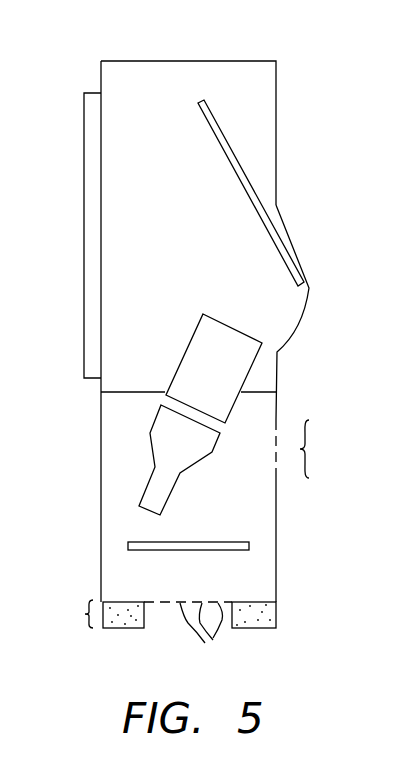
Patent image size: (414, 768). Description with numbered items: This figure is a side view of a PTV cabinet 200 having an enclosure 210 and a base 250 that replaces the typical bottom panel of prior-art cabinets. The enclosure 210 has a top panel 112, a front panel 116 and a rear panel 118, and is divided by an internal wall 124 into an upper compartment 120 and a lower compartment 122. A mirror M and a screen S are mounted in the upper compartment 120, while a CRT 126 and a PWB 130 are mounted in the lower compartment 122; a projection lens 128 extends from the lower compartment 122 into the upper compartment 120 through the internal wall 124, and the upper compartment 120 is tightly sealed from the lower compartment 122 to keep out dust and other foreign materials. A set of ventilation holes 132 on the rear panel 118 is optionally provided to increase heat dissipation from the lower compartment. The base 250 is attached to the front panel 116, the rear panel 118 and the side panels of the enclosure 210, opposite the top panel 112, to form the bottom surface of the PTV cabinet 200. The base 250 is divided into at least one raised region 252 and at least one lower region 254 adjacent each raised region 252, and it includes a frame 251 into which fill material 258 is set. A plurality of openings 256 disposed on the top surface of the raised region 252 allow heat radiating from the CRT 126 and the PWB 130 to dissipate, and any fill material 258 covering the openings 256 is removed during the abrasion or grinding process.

The PTV cabinet 200 is at (48, 153).
The top panel 112 is at (206, 61).
The upper compartment 120 is at (146, 71).
The lower compartment 122 is at (122, 427).
The front panel 116 is at (101, 469).
The rear panel 118 is at (301, 318).
The enclosure 210 is at (289, 125).
The screen S is at (84, 249).
The mirror M is at (225, 148).
The internal wall 124 is at (134, 392).
The projection lens 128 is at (227, 340).
The CRT 126 is at (182, 460).
The set of ventilation holes 132 is at (310, 449).
The PWB 130 is at (249, 546).
The base 250 is at (141, 614).
The lower region 254 is at (116, 631).
The frame 251 is at (277, 617).
The fill material 258 is at (245, 610).
The raised region 252 is at (175, 610).
The openings 256 is at (209, 634).